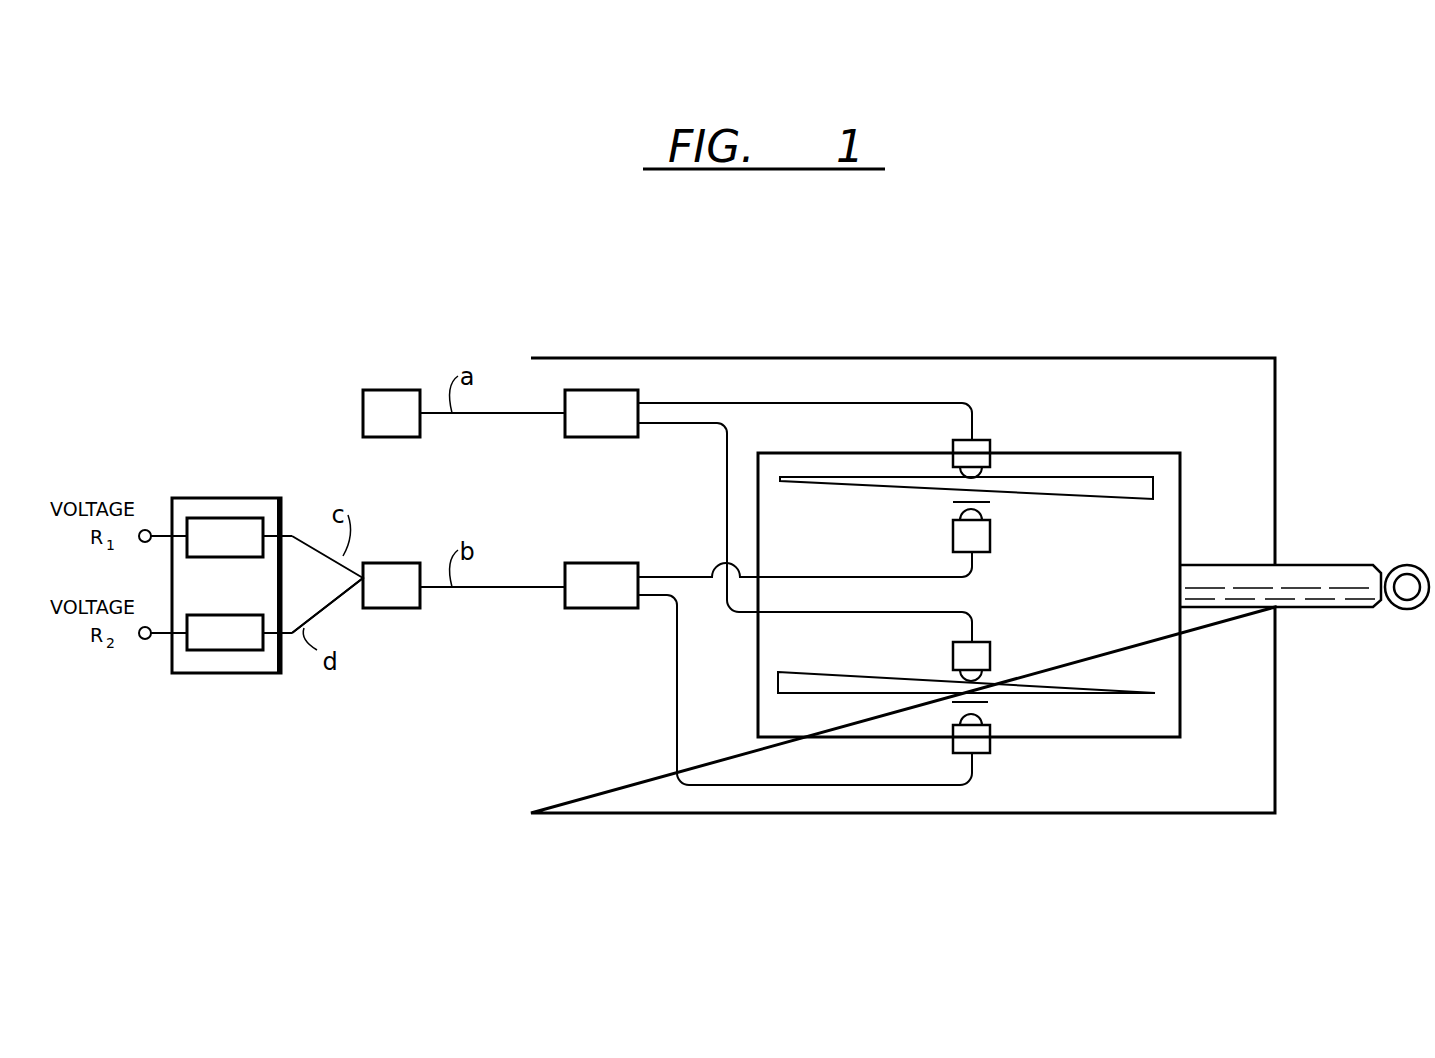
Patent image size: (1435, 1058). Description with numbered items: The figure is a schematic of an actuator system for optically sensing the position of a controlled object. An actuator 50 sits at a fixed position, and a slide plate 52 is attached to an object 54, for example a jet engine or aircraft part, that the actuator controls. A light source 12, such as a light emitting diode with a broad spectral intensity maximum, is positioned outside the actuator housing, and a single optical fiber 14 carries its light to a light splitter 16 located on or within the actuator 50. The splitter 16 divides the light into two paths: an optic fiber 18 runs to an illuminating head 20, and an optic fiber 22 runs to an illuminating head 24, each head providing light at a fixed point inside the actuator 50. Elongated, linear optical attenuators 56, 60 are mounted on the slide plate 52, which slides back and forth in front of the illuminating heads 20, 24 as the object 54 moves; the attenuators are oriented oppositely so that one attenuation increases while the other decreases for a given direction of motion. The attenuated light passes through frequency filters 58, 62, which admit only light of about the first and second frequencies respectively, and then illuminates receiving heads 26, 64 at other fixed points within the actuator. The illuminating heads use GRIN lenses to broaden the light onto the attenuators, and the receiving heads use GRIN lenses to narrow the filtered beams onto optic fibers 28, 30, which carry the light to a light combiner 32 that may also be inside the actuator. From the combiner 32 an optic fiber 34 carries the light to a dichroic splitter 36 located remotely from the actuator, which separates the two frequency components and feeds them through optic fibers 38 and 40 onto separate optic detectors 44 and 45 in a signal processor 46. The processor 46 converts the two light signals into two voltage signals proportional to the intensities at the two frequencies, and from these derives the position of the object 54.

The light source 12 is at (378, 390).
The optical fiber 14 is at (508, 414).
The light splitter 16 is at (607, 390).
The optic fiber 18 is at (865, 403).
The illuminating head 20 is at (993, 447).
The optic fiber 22 is at (727, 468).
The illuminating head 24 is at (993, 653).
The receiving head 26 is at (993, 537).
The optic fiber 28 is at (825, 577).
The optic fiber 30 is at (677, 710).
The light combiner 32 is at (600, 563).
The optic fiber 34 is at (510, 588).
The dichroic splitter 36 is at (404, 562).
The optic fiber 38 is at (306, 543).
The optic fiber 40 is at (336, 600).
The optic detector 44 is at (245, 518).
The optic detector 45 is at (223, 650).
The signal processor 46 is at (222, 498).
The actuator 50 is at (1100, 358).
The slide plate 52 is at (1155, 740).
The object 54 is at (1416, 565).
The linear optical attenuator 56 is at (1103, 500).
The frequency filter 58 is at (953, 502).
The linear optical attenuator 60 is at (1087, 687).
The frequency filter 62 is at (988, 703).
The receiving head 64 is at (968, 737).